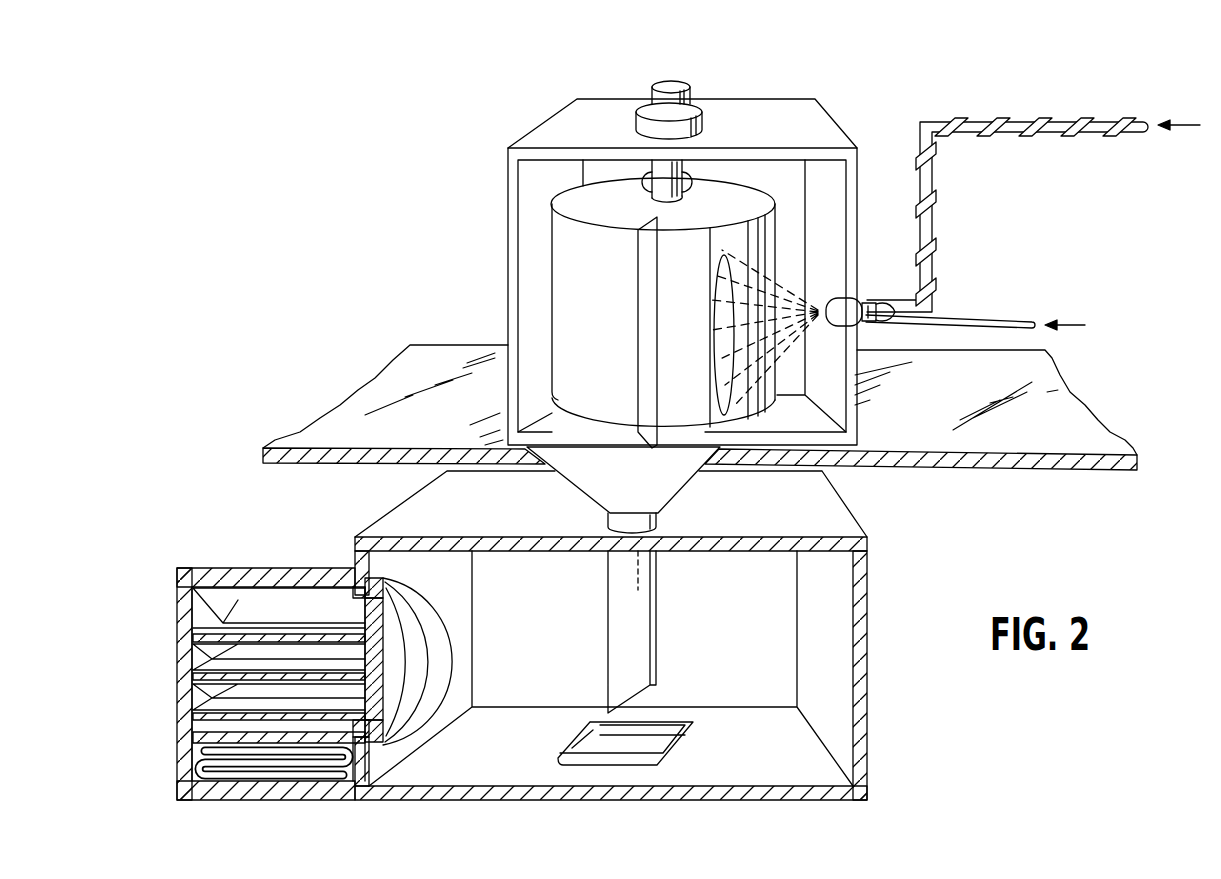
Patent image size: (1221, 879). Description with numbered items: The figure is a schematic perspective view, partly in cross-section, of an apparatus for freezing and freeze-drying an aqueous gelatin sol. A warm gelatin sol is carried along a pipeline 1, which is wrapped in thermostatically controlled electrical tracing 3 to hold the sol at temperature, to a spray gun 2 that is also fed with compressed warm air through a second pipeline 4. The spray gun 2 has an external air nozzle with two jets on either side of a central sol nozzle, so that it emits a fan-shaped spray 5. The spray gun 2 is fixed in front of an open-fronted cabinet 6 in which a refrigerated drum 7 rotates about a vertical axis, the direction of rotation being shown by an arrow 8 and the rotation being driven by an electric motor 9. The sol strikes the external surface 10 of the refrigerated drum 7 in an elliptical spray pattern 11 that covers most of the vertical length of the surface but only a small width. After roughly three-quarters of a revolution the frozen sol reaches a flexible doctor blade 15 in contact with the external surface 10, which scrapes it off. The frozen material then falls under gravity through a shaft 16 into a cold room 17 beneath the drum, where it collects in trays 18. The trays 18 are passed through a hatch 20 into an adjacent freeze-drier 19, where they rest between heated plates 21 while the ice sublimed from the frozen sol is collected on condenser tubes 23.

The pipeline 1 is at (1124, 133).
The spray gun 2 is at (857, 300).
The thermostatically controlled electrical tracing 3 is at (1010, 134).
The pipeline 4 is at (1015, 320).
The fan-shaped spray 5 is at (795, 300).
The open-fronted cabinet 6 is at (825, 128).
The refrigerated drum 7 is at (568, 197).
The arrow 8 is at (655, 183).
The electric motor 9 is at (685, 95).
The external surface 10 is at (553, 253).
The elliptical spray pattern 11 is at (717, 342).
The flexible doctor blade 15 is at (638, 287).
The shaft 16 is at (657, 622).
The cold room 17 is at (402, 506).
The trays 18 is at (693, 735).
The freeze-drier 19 is at (281, 552).
The hatch 20 is at (422, 658).
The plates 21 is at (217, 703).
The condenser tubes 23 is at (205, 760).